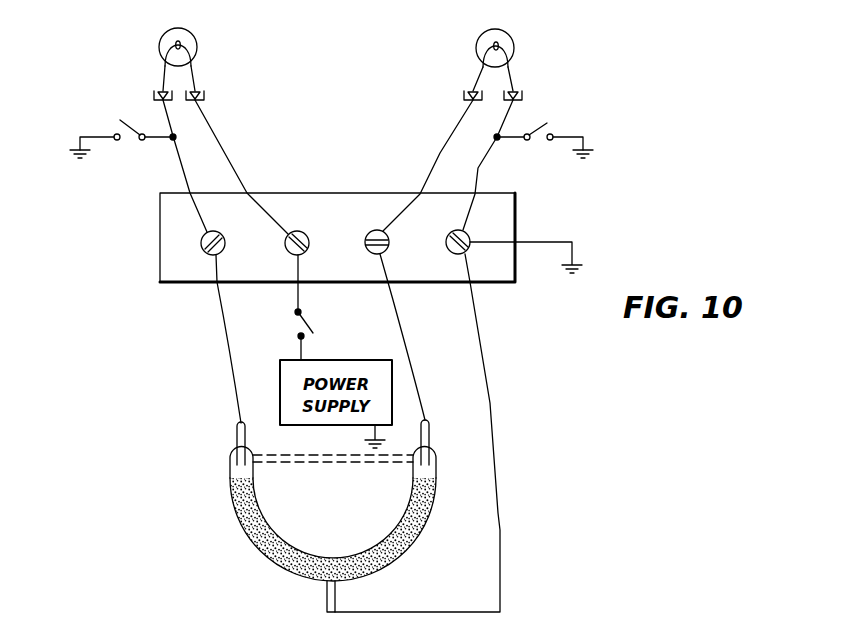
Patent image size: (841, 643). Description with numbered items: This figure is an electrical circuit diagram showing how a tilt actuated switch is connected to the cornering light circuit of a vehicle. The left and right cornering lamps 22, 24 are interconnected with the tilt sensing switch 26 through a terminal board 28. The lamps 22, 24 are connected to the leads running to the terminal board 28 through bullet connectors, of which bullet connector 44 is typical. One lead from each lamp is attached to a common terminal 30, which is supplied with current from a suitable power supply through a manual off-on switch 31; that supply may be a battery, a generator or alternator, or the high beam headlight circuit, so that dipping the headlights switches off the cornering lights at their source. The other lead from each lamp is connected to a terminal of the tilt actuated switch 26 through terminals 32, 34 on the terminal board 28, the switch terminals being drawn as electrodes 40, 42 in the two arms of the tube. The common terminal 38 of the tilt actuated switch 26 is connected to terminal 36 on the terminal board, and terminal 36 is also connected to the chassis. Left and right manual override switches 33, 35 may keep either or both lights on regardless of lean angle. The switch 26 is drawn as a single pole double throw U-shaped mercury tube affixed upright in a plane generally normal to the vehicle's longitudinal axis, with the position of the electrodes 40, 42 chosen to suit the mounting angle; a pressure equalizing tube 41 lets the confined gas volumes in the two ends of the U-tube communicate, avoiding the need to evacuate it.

The left cornering lamp 22 is at (197, 50).
The right cornering lamp 24 is at (514, 43).
The tilt actuated switch 26 is at (280, 545).
The terminal board 28 is at (500, 208).
The common terminal 30 is at (284, 238).
The manual off-on switch 31 is at (306, 322).
The terminal 32 is at (200, 238).
The left manual override switch 33 is at (140, 110).
The terminal 34 is at (364, 237).
The right manual override switch 35 is at (534, 126).
The terminal 36 is at (445, 239).
The common terminal of tilt actuated switch 38 is at (325, 598).
The electrode 40 is at (233, 432).
The pressure equalizing tube 41 is at (296, 464).
The electrode 42 is at (433, 431).
The bullet connector 44 is at (532, 90).